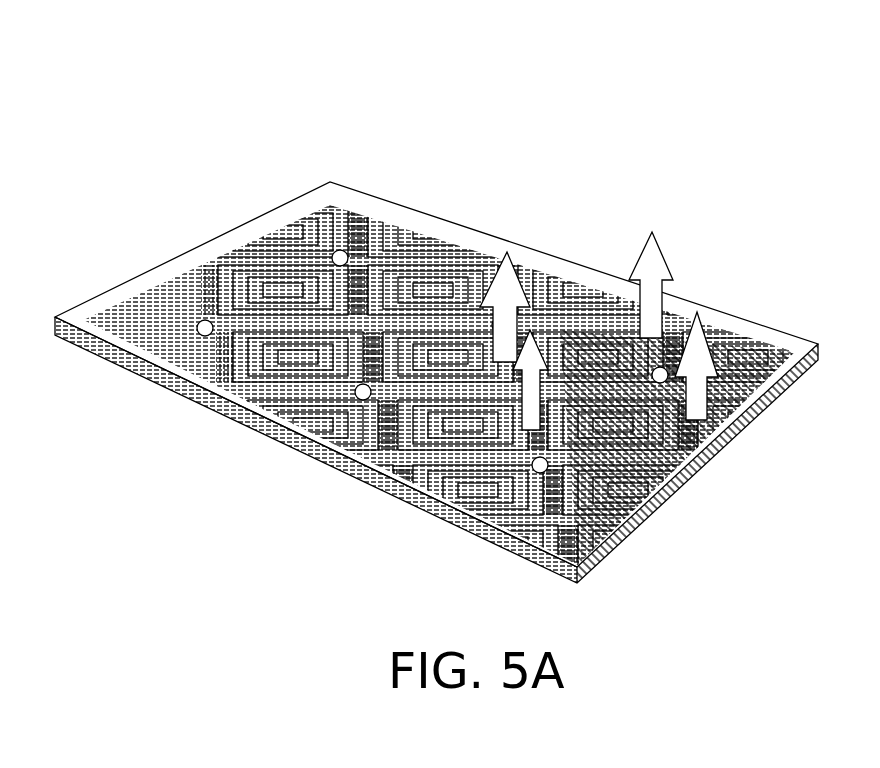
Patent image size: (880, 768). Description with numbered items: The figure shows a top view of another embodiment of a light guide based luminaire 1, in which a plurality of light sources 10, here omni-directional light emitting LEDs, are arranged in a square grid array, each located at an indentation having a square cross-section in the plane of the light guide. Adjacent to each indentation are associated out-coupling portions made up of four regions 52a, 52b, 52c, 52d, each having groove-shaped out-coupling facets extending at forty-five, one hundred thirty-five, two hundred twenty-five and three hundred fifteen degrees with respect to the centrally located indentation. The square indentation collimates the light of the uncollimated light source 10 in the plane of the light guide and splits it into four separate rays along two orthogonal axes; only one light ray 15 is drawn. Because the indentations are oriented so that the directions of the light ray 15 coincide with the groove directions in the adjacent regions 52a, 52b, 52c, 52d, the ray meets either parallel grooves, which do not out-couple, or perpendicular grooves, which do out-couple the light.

The luminaire 1 is at (724, 68).
The light source 10 is at (450, 363).
The light ray 15 is at (447, 385).
The out-coupling facet region 52a is at (522, 375).
The out-coupling facet region 52b is at (677, 320).
The out-coupling facet region 52c is at (733, 423).
The out-coupling facet region 52d is at (600, 425).